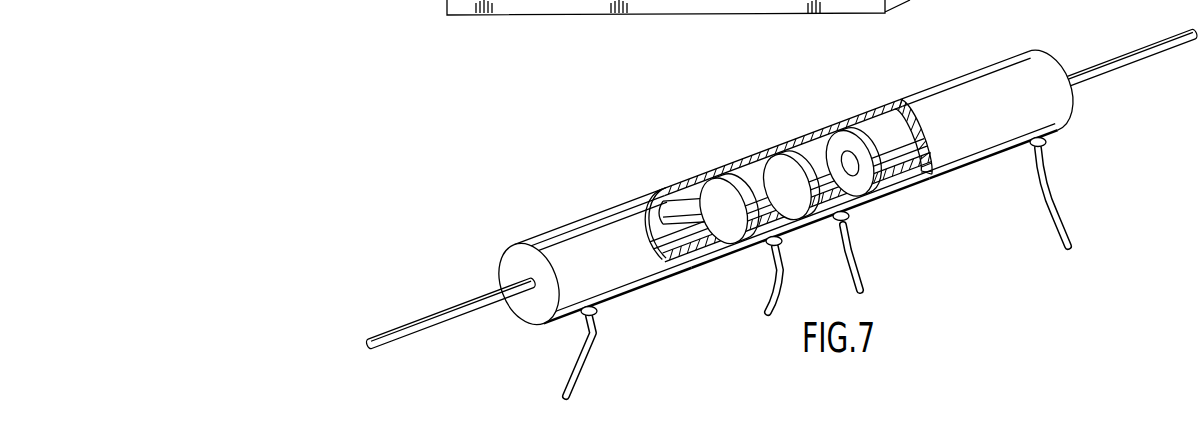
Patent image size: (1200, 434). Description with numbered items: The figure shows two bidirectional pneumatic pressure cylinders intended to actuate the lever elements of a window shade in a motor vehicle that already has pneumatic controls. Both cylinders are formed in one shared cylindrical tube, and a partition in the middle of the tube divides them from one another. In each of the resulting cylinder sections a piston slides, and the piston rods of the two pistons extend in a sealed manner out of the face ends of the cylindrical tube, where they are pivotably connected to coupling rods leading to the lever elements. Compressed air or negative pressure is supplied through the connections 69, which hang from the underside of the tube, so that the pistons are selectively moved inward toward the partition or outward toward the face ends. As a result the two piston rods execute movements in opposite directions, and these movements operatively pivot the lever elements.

The connections 69 is at (565, 378).